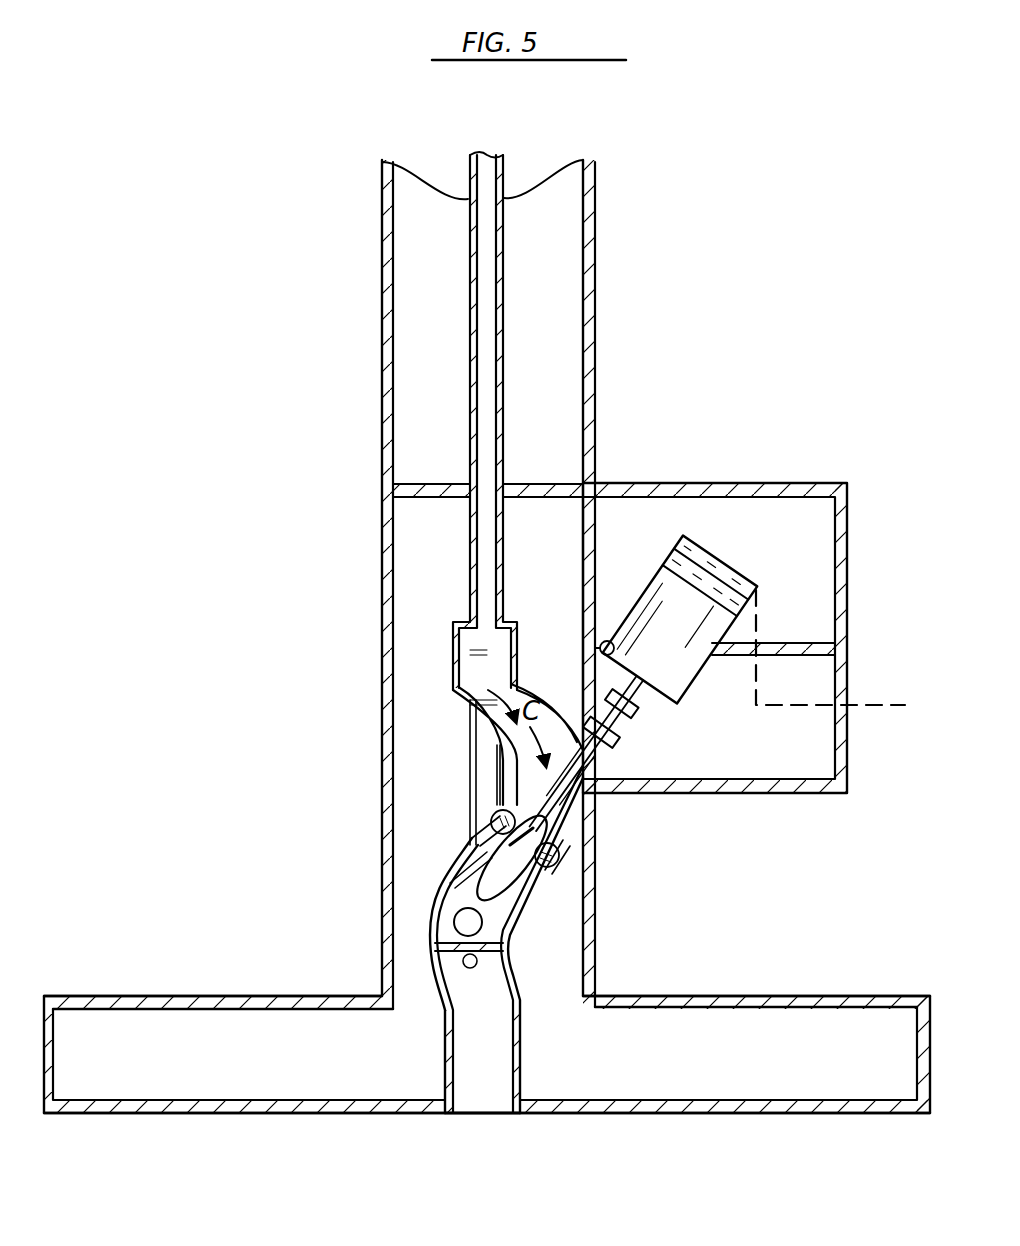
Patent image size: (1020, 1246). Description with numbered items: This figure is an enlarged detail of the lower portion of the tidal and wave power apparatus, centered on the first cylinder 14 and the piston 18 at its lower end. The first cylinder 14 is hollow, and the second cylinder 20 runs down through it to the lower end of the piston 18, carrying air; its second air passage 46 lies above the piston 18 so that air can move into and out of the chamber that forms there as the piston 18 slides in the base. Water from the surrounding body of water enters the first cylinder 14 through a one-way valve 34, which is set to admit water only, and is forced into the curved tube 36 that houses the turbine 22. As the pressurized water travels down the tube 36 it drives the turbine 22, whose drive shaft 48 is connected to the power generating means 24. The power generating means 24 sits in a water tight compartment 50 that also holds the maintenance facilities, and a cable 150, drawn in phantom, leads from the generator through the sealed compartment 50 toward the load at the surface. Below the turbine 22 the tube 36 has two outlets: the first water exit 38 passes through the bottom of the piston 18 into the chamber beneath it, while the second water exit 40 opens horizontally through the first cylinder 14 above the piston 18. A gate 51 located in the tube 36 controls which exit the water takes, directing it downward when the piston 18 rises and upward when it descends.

The first cylinder 14 is at (598, 380).
The piston 18 is at (833, 996).
The second cylinder 20 is at (503, 372).
The turbine 22 is at (500, 915).
The power generating means 24 is at (732, 570).
The one-way valve 34 is at (499, 671).
The curved tube 36 is at (472, 733).
The first water exit 38 is at (457, 1106).
The second water exit 40 is at (462, 910).
The second air passage 46 is at (468, 969).
The drive shaft 48 is at (570, 768).
The water tight compartment 50 is at (768, 483).
The gate 51 is at (500, 966).
The cable 150 is at (862, 703).